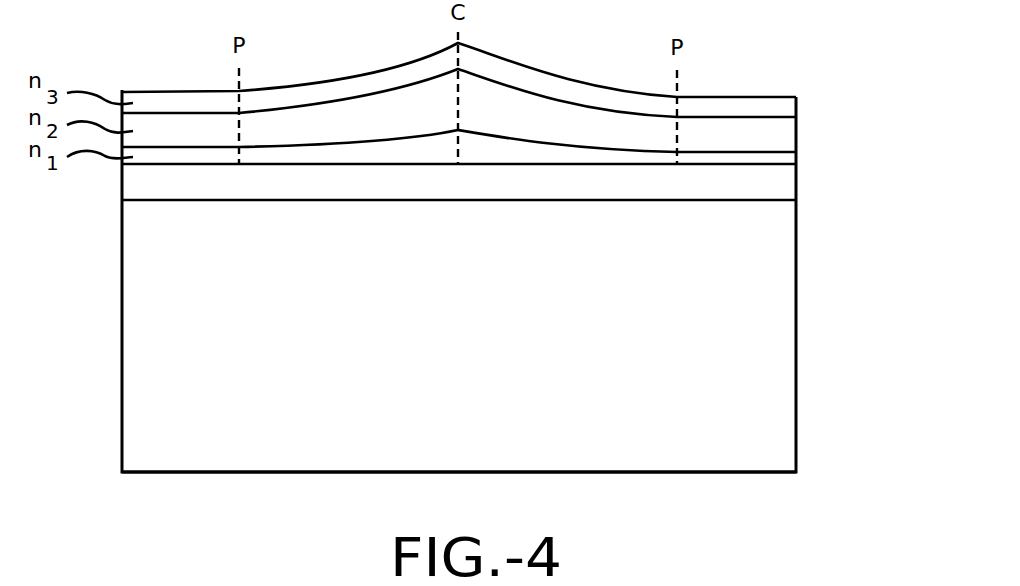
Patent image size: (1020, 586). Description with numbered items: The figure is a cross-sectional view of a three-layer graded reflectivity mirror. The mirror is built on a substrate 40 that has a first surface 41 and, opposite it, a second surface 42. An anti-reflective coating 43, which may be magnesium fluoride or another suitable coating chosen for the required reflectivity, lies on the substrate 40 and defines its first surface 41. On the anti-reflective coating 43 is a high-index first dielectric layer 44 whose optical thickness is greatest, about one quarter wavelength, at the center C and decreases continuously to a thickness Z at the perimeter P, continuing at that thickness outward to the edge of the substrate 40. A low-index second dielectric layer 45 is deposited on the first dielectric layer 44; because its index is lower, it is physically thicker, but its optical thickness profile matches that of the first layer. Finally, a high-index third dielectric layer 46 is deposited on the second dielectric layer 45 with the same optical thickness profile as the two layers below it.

The substrate 40 is at (796, 340).
The first surface 41 is at (783, 170).
The second surface 42 is at (708, 473).
The anti-reflective coating 43 is at (782, 185).
The first dielectric layer 44 is at (782, 155).
The second dielectric layer 45 is at (782, 130).
The third dielectric layer 46 is at (782, 104).